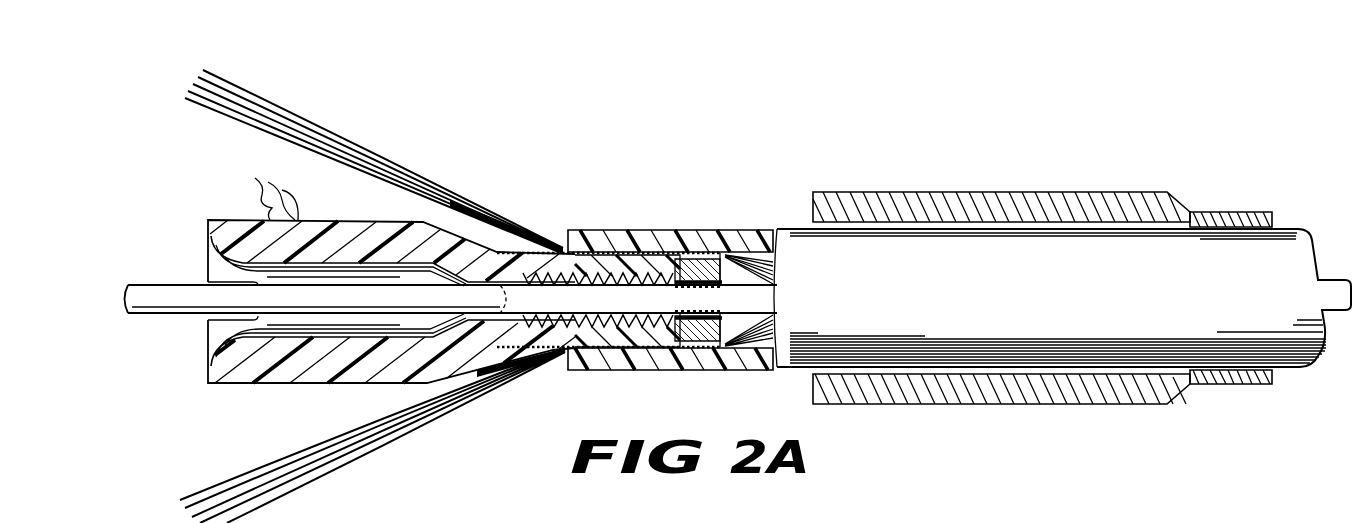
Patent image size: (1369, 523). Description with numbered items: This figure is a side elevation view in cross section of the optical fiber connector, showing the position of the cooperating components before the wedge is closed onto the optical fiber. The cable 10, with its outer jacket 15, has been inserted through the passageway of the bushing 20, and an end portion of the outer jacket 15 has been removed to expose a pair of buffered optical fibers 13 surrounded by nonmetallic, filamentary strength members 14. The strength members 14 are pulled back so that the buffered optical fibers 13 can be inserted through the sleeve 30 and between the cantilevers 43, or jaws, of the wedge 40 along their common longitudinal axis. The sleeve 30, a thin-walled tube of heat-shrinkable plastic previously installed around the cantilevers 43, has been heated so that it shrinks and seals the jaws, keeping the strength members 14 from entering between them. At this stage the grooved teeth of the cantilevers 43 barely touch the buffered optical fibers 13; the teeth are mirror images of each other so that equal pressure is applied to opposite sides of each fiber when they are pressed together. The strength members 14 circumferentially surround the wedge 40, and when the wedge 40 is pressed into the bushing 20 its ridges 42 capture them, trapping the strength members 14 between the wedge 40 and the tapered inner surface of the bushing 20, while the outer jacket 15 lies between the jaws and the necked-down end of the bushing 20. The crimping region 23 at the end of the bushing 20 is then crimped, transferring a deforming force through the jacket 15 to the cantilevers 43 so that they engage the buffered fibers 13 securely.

The cable 10 is at (1068, 240).
The buffered optical fibers 13 is at (172, 305).
The strength members 14 is at (277, 122).
The outer jacket 15 is at (682, 356).
The bushing 20 is at (928, 190).
The crimping region 23 is at (1228, 211).
The sleeve 30 is at (627, 270).
The wedge 40 is at (232, 384).
The ridges 42 is at (260, 183).
The cantilevers 43 is at (580, 267).